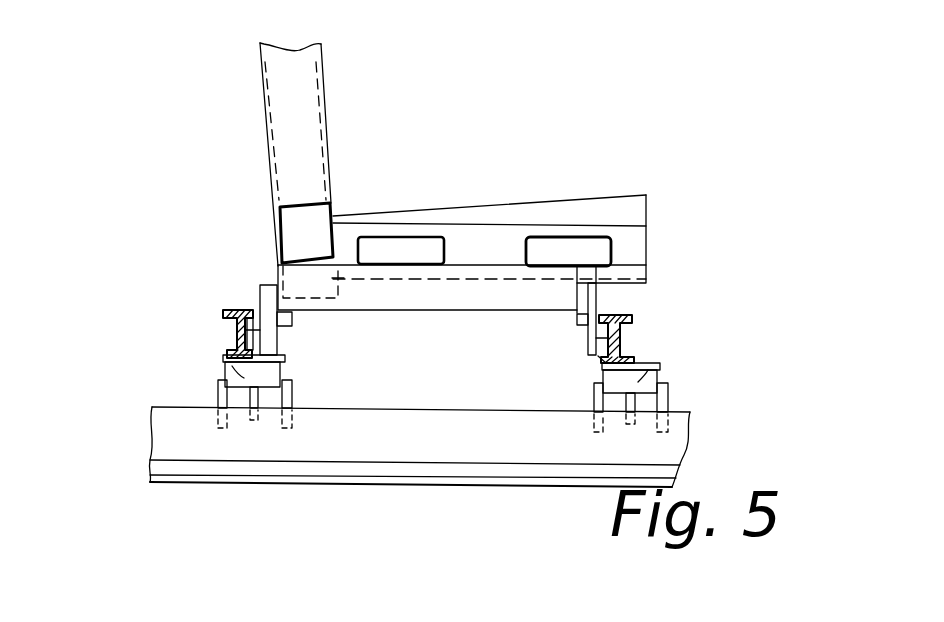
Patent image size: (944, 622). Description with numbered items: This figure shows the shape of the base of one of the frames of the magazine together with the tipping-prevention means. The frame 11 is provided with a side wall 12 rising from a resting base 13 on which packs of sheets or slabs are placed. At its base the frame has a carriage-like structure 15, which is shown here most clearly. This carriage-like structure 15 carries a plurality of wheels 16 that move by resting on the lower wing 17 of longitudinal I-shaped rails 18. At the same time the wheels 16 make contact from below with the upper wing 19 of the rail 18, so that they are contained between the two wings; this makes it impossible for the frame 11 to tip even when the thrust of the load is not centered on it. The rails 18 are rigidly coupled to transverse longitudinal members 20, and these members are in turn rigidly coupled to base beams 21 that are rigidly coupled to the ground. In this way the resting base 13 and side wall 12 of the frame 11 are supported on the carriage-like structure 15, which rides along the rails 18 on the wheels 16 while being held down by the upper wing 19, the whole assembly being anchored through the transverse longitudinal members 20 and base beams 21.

The frame 11 is at (378, 146).
The side wall 12 is at (281, 143).
The resting base 13 is at (503, 201).
The carriage-like structure 15 is at (438, 316).
The wheels 16 is at (232, 328).
The lower wing 17 is at (600, 364).
The longitudinal I-shaped rails 18 is at (235, 306).
The upper wing 19 is at (600, 315).
The transverse longitudinal members 20 is at (225, 366).
The base beams 21 is at (338, 442).